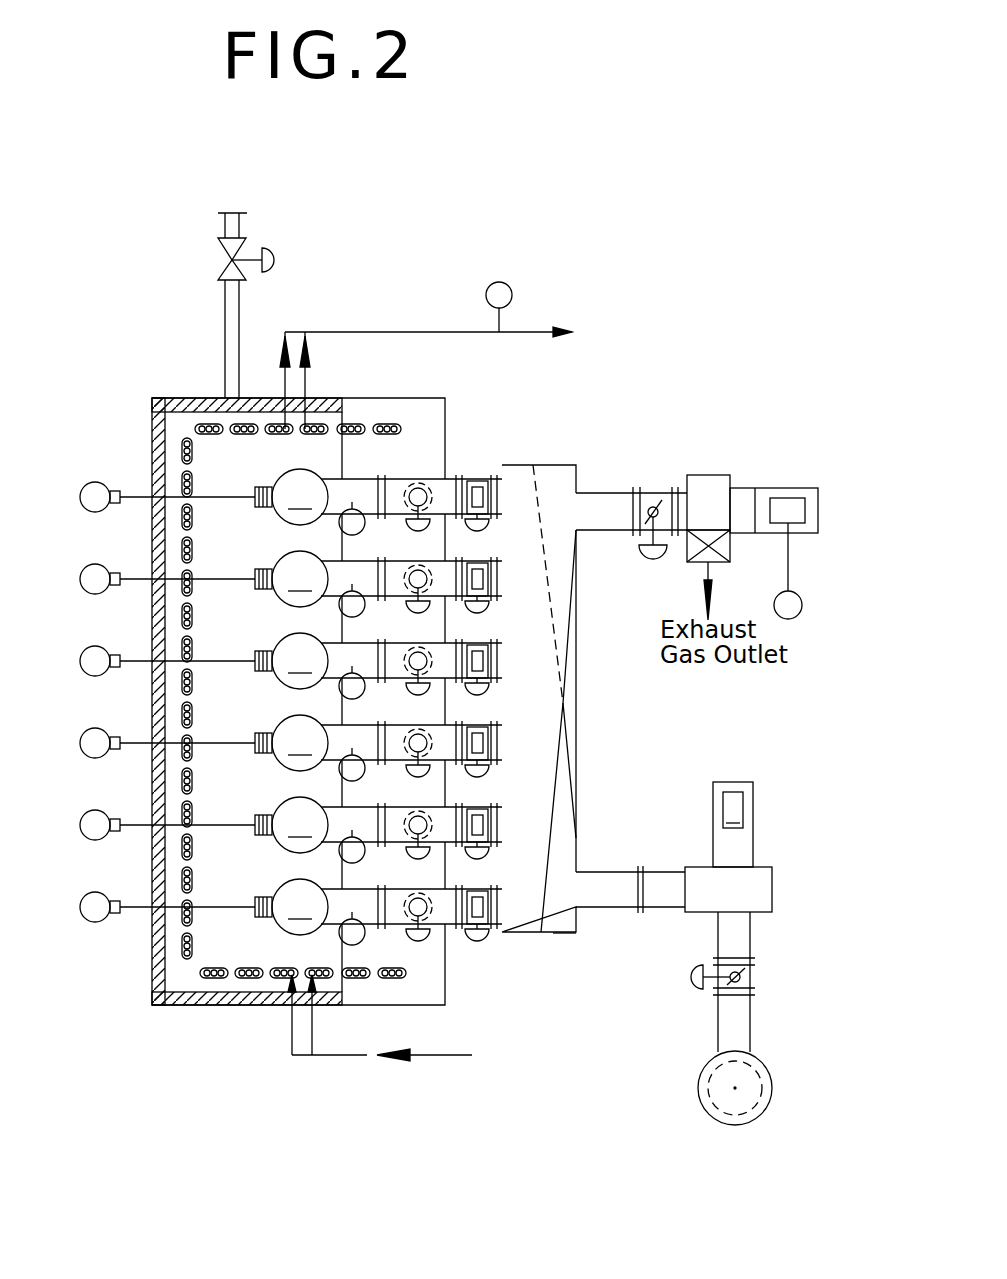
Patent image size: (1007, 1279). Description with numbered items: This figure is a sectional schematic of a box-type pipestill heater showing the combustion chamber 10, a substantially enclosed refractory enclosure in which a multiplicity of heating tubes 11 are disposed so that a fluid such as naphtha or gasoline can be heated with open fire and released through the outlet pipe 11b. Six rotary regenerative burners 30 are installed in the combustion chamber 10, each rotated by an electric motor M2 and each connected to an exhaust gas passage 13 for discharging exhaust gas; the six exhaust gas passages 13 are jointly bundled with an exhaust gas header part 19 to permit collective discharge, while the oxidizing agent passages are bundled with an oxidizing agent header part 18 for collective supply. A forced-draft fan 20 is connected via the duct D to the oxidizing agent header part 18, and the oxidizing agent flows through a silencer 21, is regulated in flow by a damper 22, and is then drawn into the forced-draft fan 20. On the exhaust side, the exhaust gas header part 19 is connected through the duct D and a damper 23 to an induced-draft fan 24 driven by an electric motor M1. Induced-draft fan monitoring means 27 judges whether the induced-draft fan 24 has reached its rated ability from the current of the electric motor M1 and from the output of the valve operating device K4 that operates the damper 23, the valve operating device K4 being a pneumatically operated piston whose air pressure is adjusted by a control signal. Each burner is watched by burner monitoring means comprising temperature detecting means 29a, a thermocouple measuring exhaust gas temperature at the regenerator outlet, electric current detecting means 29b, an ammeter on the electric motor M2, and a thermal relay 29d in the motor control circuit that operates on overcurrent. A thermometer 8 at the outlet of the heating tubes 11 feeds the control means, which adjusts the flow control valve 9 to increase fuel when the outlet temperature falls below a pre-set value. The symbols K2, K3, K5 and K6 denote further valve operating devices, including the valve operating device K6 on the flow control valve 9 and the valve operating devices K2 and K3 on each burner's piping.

The thermometer 8 is at (499, 282).
The flow control valve 9 is at (222, 250).
The combustion chamber 10 is at (152, 410).
The heating tubes 11 is at (187, 450).
The outlet pipe 11b is at (394, 332).
The exhaust gas passage 13 is at (385, 519).
The oxidizing agent header part 18 is at (563, 925).
The exhaust gas header part 19 is at (545, 478).
The forced-draft fan 20 is at (787, 886).
The silencer 21 is at (773, 1085).
The damper 22 is at (745, 970).
The damper (control valve) 23 is at (660, 503).
The induced-draft fan 24 is at (711, 470).
The induced-draft fan monitoring means 27 is at (802, 605).
The temperature detecting means 29a is at (341, 532).
The electric current detecting means 29b is at (80, 497).
The thermal relay 29d is at (117, 503).
The rotary regenerative burner 30 is at (300, 702).
The duct D is at (605, 532).
The valve operating device K2 is at (429, 532).
The valve operating device K3 is at (488, 532).
The valve operating device K4 is at (657, 560).
The valve operating device K5 is at (692, 977).
The valve operating device K6 is at (275, 260).
The electric motor M1 is at (790, 498).
The electric motor M2 is at (257, 487).